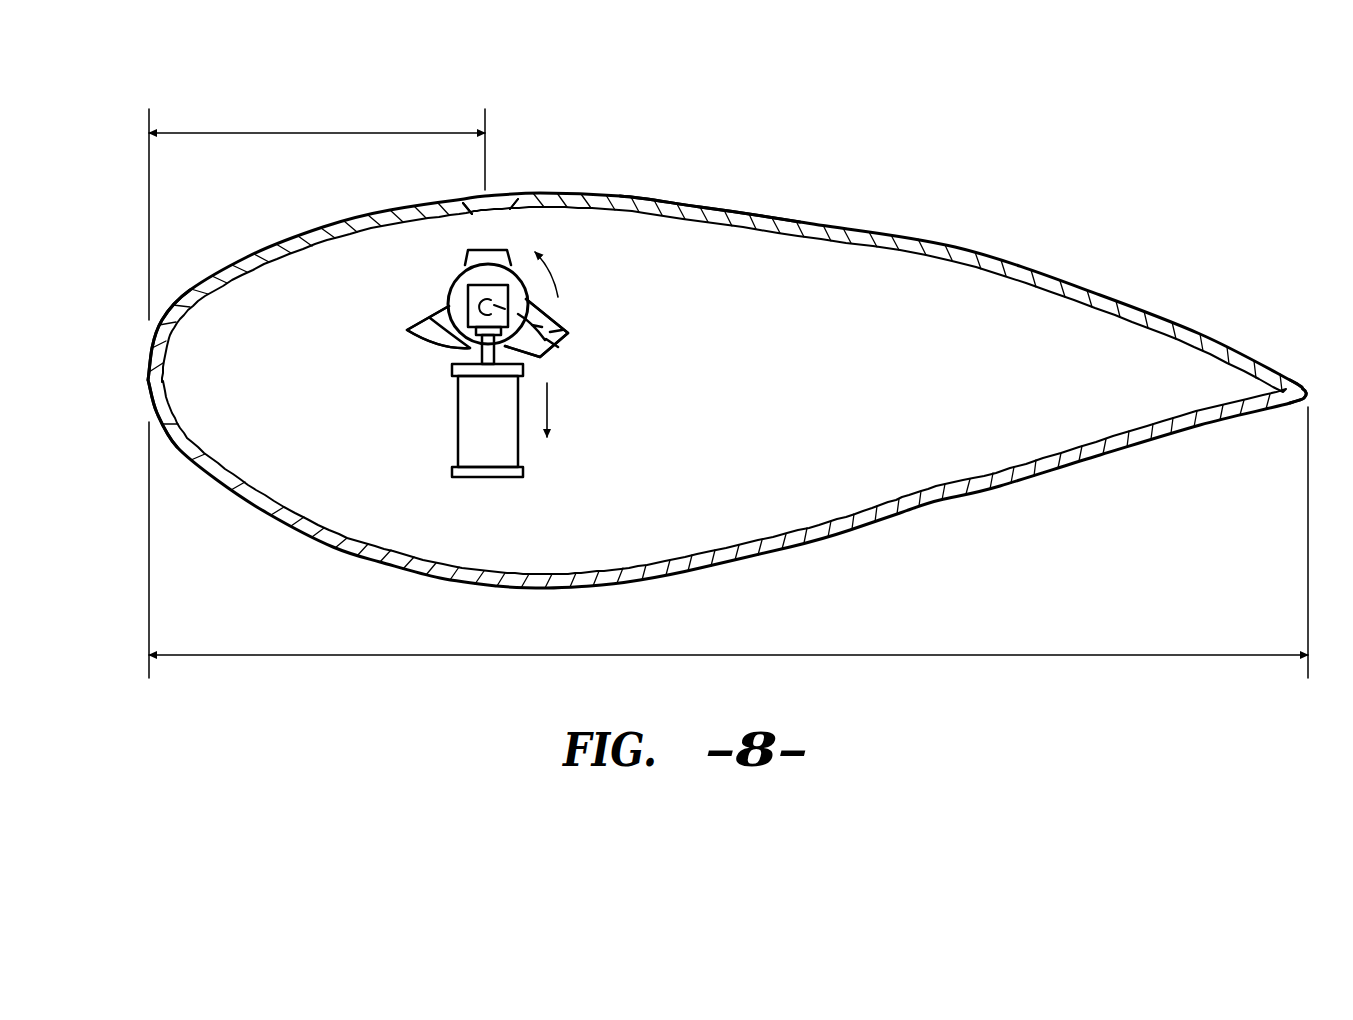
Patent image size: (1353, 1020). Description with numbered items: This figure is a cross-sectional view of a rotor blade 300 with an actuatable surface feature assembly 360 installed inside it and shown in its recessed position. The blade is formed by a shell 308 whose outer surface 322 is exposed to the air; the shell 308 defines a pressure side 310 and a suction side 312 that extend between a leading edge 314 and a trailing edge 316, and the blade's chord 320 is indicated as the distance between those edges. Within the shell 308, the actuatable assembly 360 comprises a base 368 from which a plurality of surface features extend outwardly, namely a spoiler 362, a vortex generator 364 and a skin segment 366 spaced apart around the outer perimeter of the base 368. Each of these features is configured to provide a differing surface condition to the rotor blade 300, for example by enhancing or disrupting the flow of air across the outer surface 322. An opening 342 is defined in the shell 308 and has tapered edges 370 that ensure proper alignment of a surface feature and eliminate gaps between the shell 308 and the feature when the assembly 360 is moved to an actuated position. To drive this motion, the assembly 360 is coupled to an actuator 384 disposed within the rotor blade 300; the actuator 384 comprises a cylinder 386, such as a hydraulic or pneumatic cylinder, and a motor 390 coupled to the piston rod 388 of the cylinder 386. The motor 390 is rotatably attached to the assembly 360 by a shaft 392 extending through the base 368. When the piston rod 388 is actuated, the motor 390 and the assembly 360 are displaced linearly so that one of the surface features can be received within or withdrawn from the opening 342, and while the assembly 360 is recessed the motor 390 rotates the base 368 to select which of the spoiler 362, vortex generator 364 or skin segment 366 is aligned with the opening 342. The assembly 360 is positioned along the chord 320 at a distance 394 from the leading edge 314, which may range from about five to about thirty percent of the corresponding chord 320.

The rotor blade 300 is at (1128, 181).
The shell 308 is at (1112, 288).
The pressure side 310 is at (848, 532).
The suction side 312 is at (952, 247).
The leading edge 314 is at (145, 372).
The trailing edge 316 is at (1312, 390).
The chord 320 is at (985, 655).
The outer surface 322 is at (732, 207).
The opening 342 is at (493, 207).
The actuatable surface feature assembly 360 is at (585, 278).
The spoiler 362 is at (433, 313).
The vortex generator 364 is at (560, 330).
The skin segment 366 is at (500, 257).
The base 368 is at (458, 272).
The tapered edges 370 is at (517, 210).
The actuator 384 is at (440, 420).
The cylinder 386 is at (455, 442).
The piston rod 388 is at (462, 352).
The motor 390 is at (417, 332).
The shaft 392 is at (560, 365).
The distance 394 is at (296, 132).